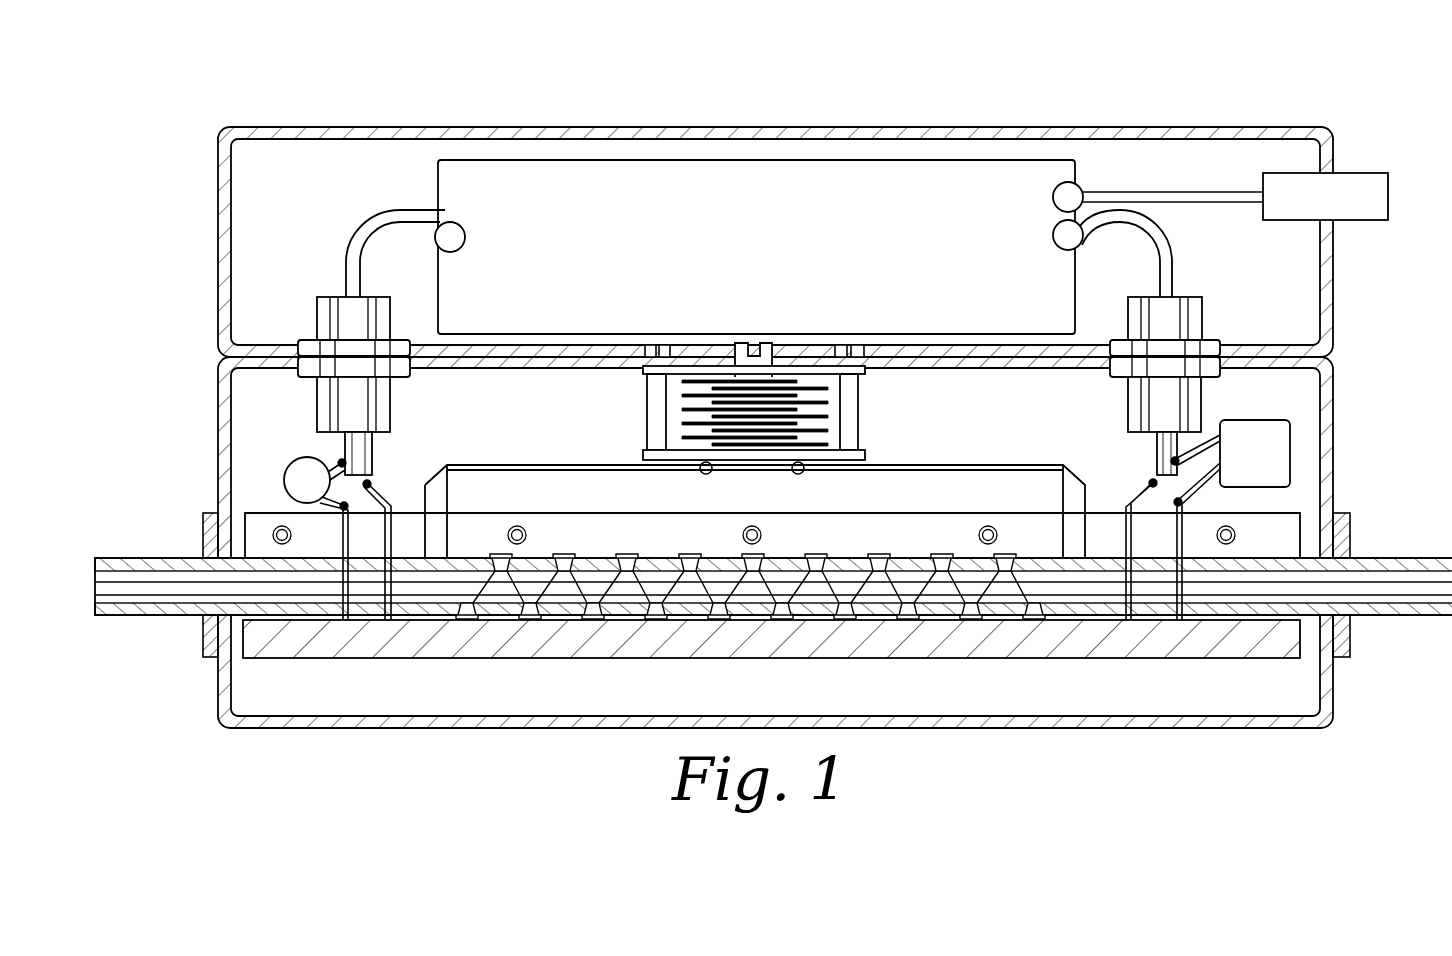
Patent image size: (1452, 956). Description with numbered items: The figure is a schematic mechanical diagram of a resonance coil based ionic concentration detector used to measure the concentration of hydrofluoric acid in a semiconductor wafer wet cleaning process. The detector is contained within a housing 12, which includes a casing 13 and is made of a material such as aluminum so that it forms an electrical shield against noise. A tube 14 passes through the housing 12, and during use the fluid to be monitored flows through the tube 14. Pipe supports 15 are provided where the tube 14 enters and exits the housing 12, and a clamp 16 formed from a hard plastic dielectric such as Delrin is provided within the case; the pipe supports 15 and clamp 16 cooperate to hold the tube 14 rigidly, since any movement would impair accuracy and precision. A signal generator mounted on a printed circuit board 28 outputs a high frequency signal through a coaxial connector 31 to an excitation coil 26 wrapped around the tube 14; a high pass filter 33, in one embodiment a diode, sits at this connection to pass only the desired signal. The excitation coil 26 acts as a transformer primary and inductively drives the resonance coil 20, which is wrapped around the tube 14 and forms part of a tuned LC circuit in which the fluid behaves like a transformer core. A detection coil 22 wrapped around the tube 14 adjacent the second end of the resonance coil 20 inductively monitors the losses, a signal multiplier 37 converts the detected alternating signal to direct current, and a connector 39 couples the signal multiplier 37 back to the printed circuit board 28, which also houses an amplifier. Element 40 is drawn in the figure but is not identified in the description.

The housing 12 is at (587, 137).
The casing 13 is at (1078, 728).
The tube 14 is at (149, 616).
The pipe supports 15 is at (208, 532).
The clamp 16 is at (928, 660).
The resonance coil 20 is at (780, 623).
The detection coil 22 is at (1178, 623).
The excitation coil 26 is at (343, 623).
The printed circuit board 28 is at (827, 227).
The coaxial connector 31 is at (337, 296).
The high pass filter 33 is at (283, 480).
The signal multiplier 37 is at (1260, 455).
The connector 39 is at (1208, 318).
The connector 40 is at (1364, 173).